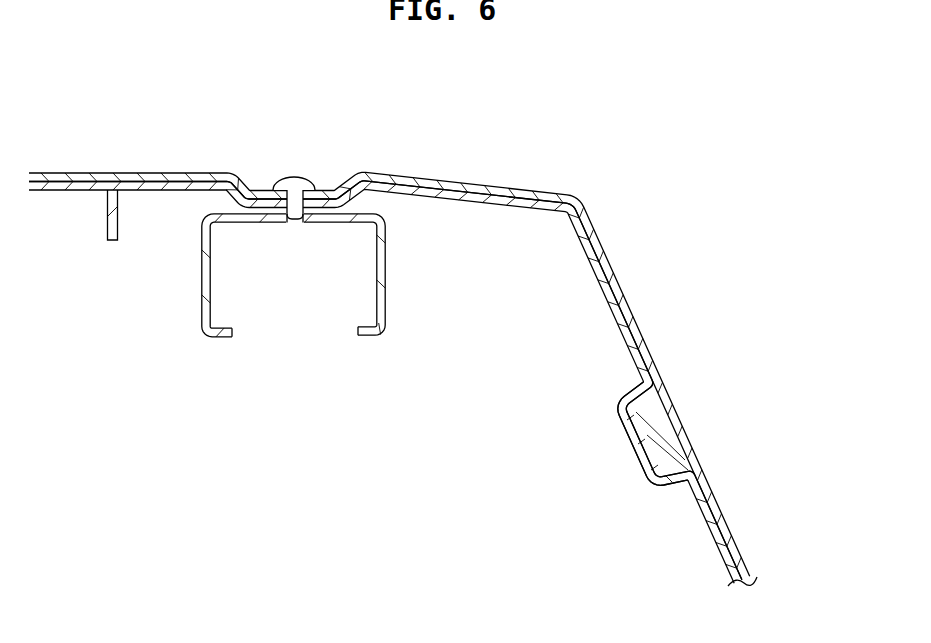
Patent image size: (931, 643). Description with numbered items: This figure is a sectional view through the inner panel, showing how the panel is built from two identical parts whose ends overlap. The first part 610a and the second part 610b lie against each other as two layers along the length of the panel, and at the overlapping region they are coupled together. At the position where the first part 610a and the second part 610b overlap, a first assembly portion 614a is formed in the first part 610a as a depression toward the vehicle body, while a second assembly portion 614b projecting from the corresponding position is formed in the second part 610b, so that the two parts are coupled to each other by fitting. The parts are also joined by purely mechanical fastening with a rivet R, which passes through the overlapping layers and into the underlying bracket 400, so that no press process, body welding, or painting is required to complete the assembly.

The rivet R is at (293, 178).
The mounting bracket (C-channel) 400 is at (205, 323).
The first part 610a is at (606, 236).
The second part 610b is at (610, 319).
The first assembly portion 614a is at (667, 425).
The second assembly portion 614b is at (642, 465).